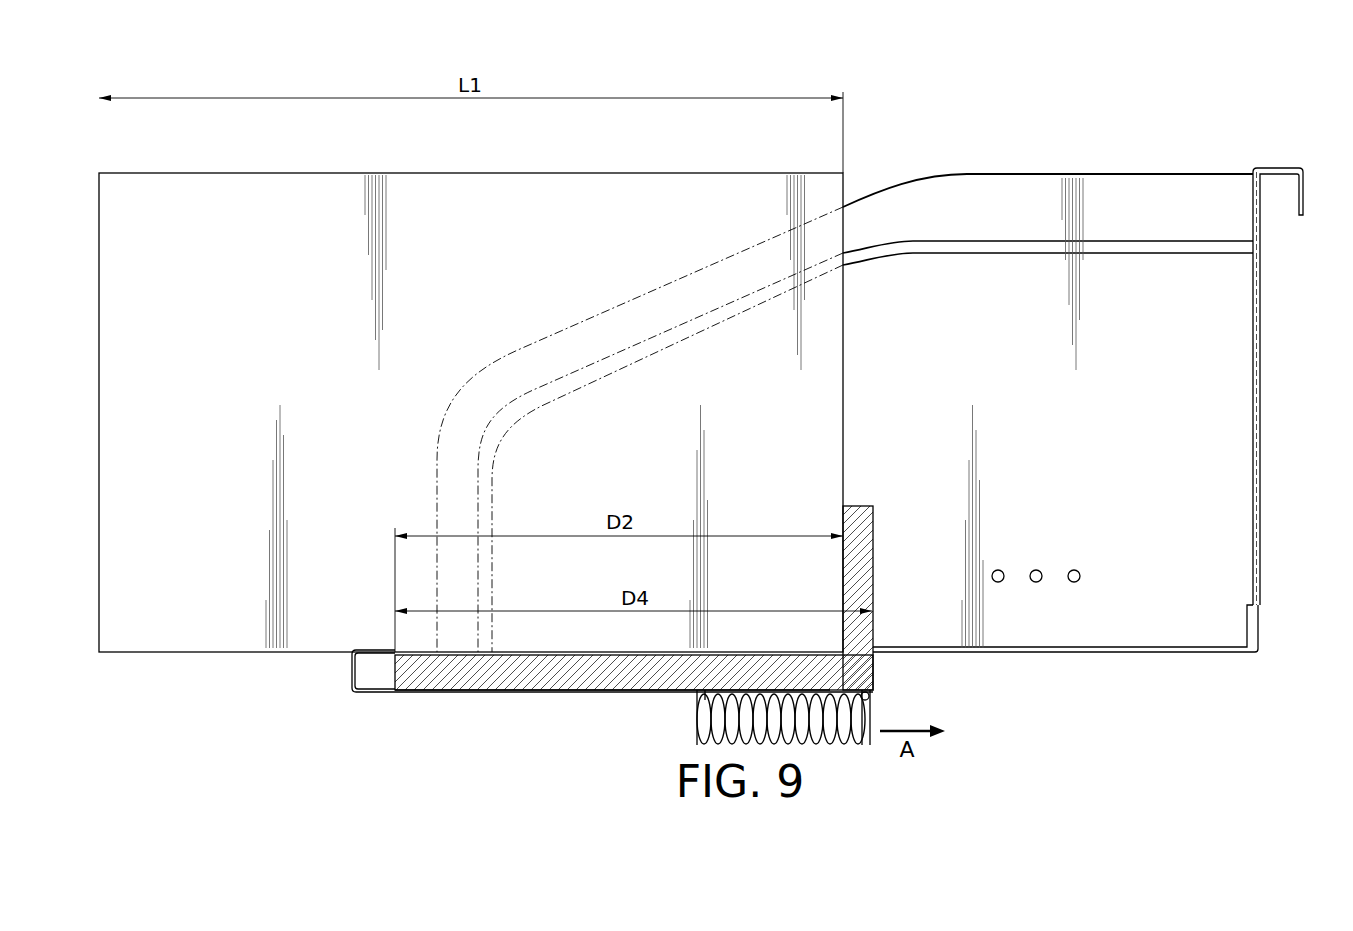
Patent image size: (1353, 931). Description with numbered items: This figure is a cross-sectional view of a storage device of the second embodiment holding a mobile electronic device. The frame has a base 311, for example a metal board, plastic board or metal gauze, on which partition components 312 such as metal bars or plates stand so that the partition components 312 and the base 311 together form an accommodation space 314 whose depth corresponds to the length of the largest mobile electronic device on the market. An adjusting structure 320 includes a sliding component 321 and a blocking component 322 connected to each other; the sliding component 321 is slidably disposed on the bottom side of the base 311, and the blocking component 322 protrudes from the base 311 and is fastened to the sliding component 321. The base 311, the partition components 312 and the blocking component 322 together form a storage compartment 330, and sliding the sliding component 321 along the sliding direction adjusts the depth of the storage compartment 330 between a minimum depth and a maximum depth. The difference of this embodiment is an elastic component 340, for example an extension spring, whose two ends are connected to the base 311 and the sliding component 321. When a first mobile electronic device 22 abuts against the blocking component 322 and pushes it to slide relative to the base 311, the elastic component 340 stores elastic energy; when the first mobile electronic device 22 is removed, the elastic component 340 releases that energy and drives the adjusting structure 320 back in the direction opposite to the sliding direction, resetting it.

The first mobile electronic device 22 is at (225, 187).
The base 311 is at (372, 650).
The partition component 312 is at (1005, 245).
The accommodation space 314 is at (1167, 518).
The adjusting structure 320 is at (705, 600).
The sliding component 321 is at (857, 672).
The blocking component 322 is at (868, 576).
The storage compartment 330 is at (805, 518).
The elastic component 340 is at (852, 745).